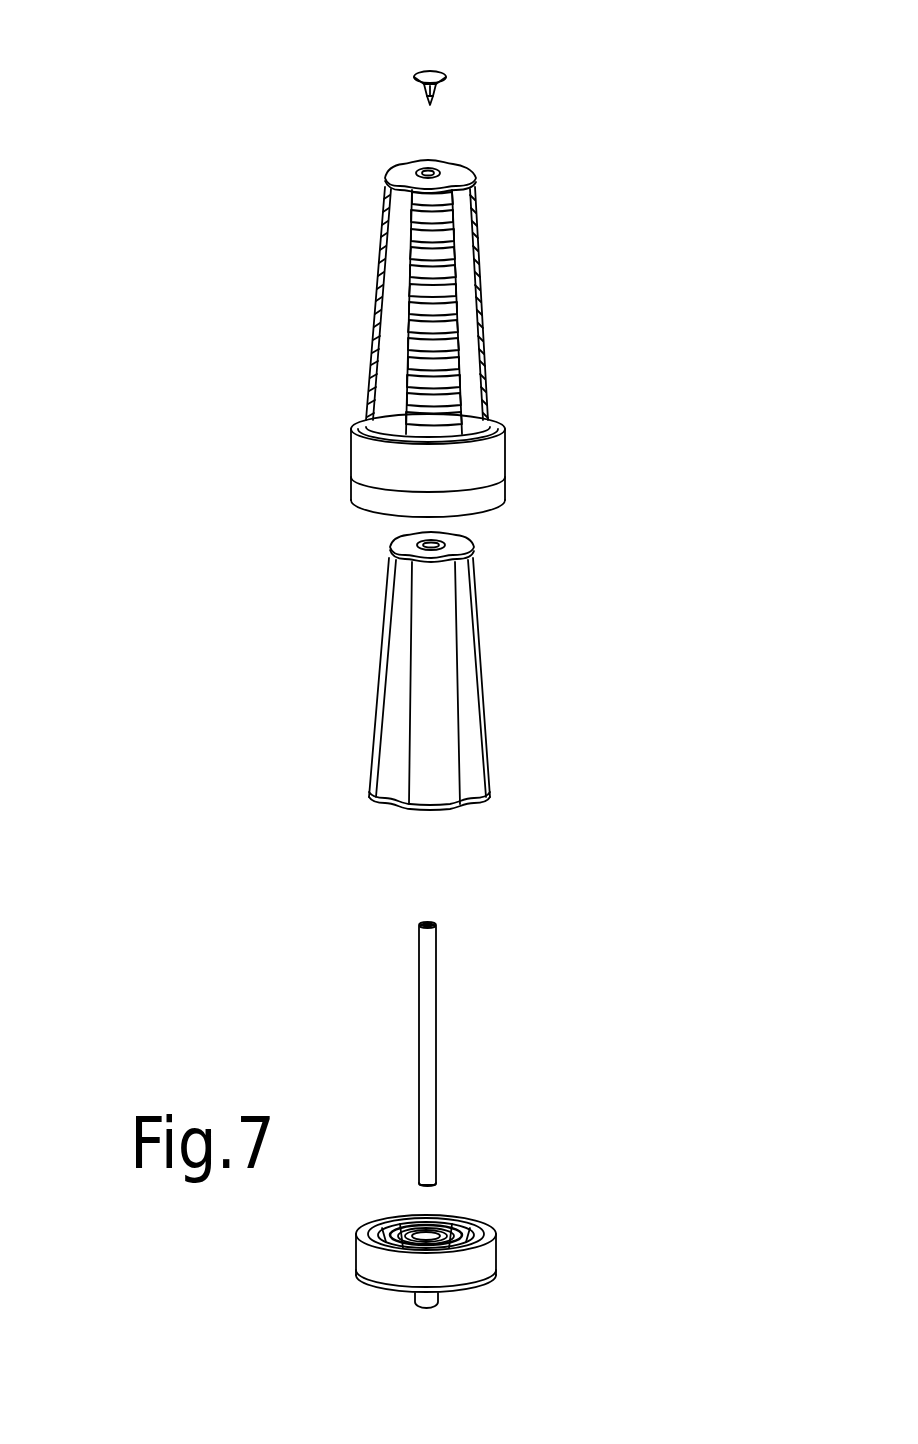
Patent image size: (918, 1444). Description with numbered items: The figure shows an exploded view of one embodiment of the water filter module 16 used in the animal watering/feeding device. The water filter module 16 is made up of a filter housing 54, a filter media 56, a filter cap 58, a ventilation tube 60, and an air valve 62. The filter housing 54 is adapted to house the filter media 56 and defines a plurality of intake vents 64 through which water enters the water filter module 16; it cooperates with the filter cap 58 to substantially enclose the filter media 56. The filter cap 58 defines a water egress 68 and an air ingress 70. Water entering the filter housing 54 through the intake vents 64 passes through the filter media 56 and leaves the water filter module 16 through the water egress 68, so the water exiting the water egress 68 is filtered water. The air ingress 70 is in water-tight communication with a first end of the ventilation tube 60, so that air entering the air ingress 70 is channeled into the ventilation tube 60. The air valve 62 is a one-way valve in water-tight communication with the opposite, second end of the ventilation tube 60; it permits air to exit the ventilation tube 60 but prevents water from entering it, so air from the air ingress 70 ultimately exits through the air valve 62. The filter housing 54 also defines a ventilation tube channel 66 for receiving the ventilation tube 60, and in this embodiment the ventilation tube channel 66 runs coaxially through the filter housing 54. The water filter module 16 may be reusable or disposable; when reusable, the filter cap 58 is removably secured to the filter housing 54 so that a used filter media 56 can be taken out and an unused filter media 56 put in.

The water filter module 16 is at (163, 338).
The filter housing 54 is at (465, 220).
The filter media 56 is at (400, 655).
The filter cap 58 is at (478, 1268).
The ventilation tube 60 is at (437, 1028).
The air valve 62 is at (433, 78).
The intake vents 64 is at (440, 380).
The ventilation tube channel 66 is at (427, 170).
The water egress 68 is at (395, 1230).
The air ingress 70 is at (438, 1303).